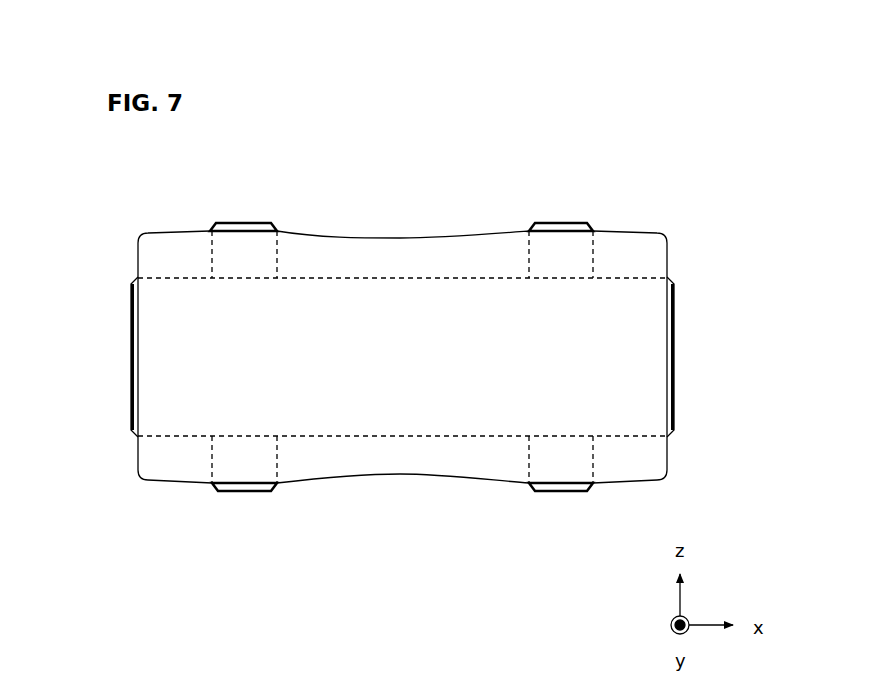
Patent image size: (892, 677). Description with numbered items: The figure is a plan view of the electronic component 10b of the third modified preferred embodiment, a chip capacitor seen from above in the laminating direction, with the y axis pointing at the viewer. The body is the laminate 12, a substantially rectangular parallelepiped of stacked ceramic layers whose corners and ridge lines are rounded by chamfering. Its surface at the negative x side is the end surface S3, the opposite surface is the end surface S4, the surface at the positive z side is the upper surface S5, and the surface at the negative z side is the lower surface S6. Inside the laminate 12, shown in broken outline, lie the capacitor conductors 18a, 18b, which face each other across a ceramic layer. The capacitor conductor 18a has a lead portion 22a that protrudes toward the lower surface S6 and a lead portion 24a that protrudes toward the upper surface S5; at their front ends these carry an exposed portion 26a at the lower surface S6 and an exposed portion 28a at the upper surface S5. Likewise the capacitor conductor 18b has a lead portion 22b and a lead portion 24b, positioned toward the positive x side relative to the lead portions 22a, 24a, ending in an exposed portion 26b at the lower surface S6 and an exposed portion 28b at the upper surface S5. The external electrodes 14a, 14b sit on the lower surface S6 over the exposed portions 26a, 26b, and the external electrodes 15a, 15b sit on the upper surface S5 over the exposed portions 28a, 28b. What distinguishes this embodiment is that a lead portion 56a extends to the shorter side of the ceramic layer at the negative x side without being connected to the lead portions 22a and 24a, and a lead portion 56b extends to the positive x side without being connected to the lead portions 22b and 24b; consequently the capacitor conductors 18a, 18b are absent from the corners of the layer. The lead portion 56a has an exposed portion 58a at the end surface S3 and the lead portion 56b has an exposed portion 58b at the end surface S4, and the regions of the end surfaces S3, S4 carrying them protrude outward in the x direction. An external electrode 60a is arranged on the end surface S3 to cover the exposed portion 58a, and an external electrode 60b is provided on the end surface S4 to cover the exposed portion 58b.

The electronic component 10b is at (154, 182).
The laminate 12 is at (678, 322).
The external electrode 14a is at (210, 492).
The external electrode 14b is at (529, 492).
The external electrode 15a is at (275, 228).
The external electrode 15b is at (593, 228).
The capacitor conductor 18a is at (540, 398).
The capacitor conductor 18b is at (776, 419).
The lead portion 22a is at (232, 462).
The lead portion 22b is at (583, 463).
The lead portion 24a is at (217, 257).
The lead portion 24b is at (535, 255).
The exposed portion 26a is at (232, 495).
The exposed portion 26b is at (560, 495).
The exposed portion 28a is at (238, 222).
The exposed portion 28b is at (560, 222).
The lead portion 56a is at (150, 312).
The lead portion 56b is at (660, 293).
The exposed portion 58a is at (130, 377).
The exposed portion 58b is at (676, 376).
The external electrode 60a is at (130, 347).
The external electrode 60b is at (676, 348).
The end surface S3 is at (138, 453).
The end surface S4 is at (668, 454).
The upper surface S5 is at (390, 237).
The lower surface S6 is at (317, 482).